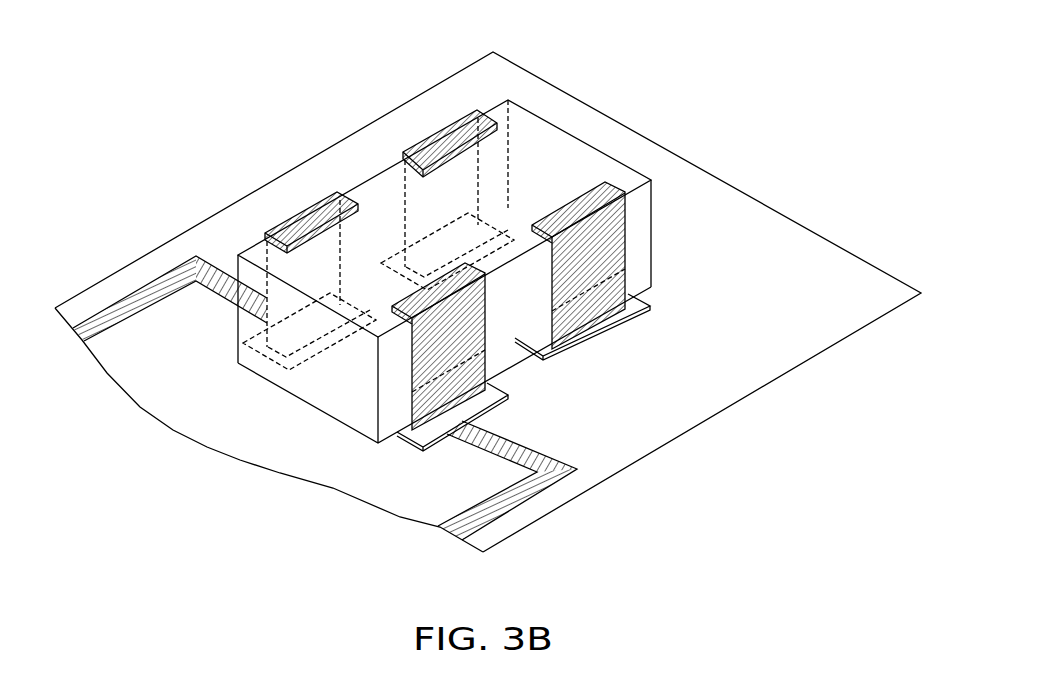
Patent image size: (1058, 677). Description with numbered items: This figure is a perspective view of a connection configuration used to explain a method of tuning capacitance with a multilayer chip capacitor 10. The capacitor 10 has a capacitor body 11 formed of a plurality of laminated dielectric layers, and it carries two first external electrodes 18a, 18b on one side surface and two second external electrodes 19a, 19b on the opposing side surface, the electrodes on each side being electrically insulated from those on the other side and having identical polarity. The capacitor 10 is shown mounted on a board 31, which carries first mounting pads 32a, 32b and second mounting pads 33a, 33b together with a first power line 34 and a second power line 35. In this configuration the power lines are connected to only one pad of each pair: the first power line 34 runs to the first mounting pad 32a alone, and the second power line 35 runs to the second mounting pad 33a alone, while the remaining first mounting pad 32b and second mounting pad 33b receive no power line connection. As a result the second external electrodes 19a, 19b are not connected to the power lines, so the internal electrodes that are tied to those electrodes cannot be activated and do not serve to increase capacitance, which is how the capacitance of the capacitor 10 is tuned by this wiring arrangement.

The multilayer chip capacitor 10 is at (430, 261).
The capacitor body 11 is at (240, 317).
The first external electrode 18a is at (283, 217).
The first external electrode 18b is at (450, 120).
The second external electrode 19a is at (475, 350).
The second external electrode 19b is at (621, 237).
The board 31 is at (750, 230).
The first mounting pad 32a is at (252, 366).
The first mounting pad 32b is at (393, 252).
The second mounting pad 33a is at (403, 447).
The second mounting pad 33b is at (607, 345).
The first power line 34 is at (137, 293).
The second power line 35 is at (513, 490).